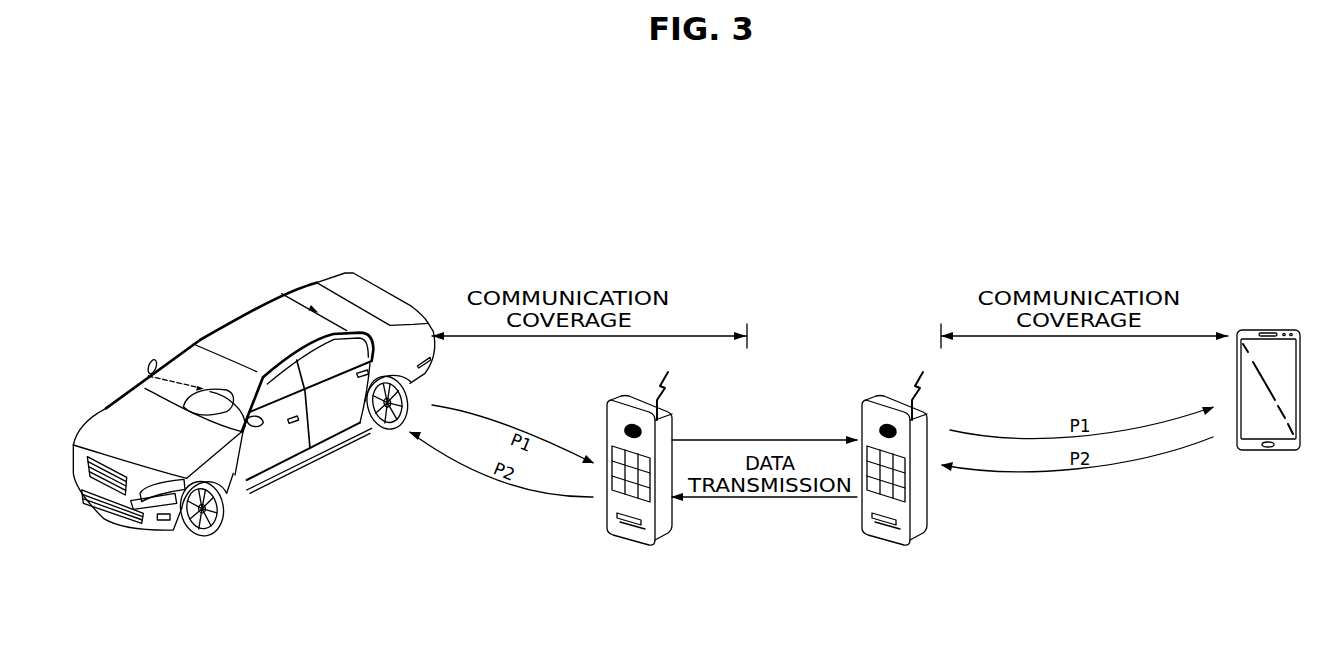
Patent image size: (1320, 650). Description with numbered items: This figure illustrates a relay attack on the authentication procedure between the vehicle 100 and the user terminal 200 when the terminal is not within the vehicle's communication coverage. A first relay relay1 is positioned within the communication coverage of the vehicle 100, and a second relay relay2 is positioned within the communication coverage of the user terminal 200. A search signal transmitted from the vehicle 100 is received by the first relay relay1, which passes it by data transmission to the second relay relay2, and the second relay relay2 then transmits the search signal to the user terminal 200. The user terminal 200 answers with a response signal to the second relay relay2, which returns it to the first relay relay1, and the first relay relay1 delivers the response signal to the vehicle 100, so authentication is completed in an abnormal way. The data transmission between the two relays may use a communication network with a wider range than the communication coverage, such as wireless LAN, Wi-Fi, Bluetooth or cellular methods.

The vehicle 100 is at (254, 316).
The user terminal 200 is at (1266, 330).
The first relay relay1 is at (672, 511).
The second relay relay2 is at (927, 498).